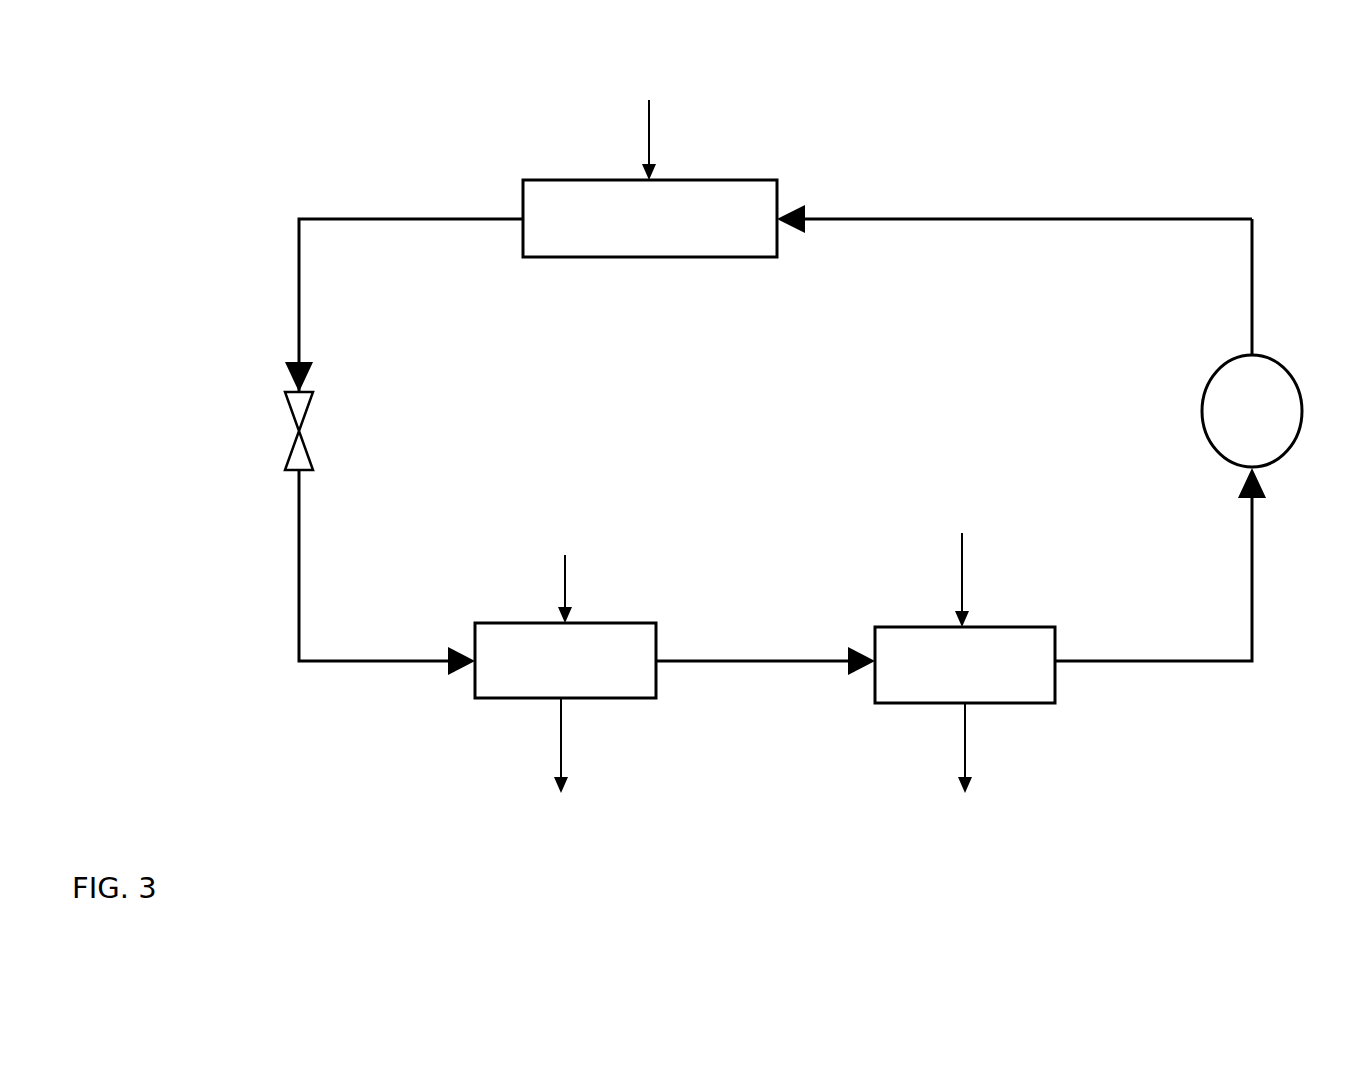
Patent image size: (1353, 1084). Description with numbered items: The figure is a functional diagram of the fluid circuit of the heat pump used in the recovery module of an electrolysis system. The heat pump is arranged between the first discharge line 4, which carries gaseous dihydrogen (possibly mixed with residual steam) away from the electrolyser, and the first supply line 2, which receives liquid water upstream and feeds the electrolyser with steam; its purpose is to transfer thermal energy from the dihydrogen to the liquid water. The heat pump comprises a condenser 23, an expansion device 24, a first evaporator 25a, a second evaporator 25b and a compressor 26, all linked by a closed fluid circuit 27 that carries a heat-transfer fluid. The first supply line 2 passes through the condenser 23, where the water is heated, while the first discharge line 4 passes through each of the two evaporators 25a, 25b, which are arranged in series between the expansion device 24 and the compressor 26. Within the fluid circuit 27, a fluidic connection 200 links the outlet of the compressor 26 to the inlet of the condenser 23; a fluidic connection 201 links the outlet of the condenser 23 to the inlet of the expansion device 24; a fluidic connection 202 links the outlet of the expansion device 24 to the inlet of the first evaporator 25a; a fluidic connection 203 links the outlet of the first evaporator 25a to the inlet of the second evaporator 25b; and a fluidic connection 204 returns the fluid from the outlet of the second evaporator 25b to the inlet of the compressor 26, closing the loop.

The first supply line 2 is at (650, 125).
The first discharge line 4 is at (921, 565).
The condenser 23 is at (650, 218).
The expansion device 24 is at (308, 455).
The first evaporator 25a is at (565, 674).
The second evaporator 25b is at (965, 663).
The compressor 26 is at (1252, 411).
The fluid circuit 27 is at (1292, 572).
The fluidic connection 200 is at (1106, 219).
The fluidic connection 201 is at (387, 219).
The fluidic connection 202 is at (300, 572).
The fluidic connection 203 is at (734, 661).
The fluidic connection 204 is at (1106, 661).